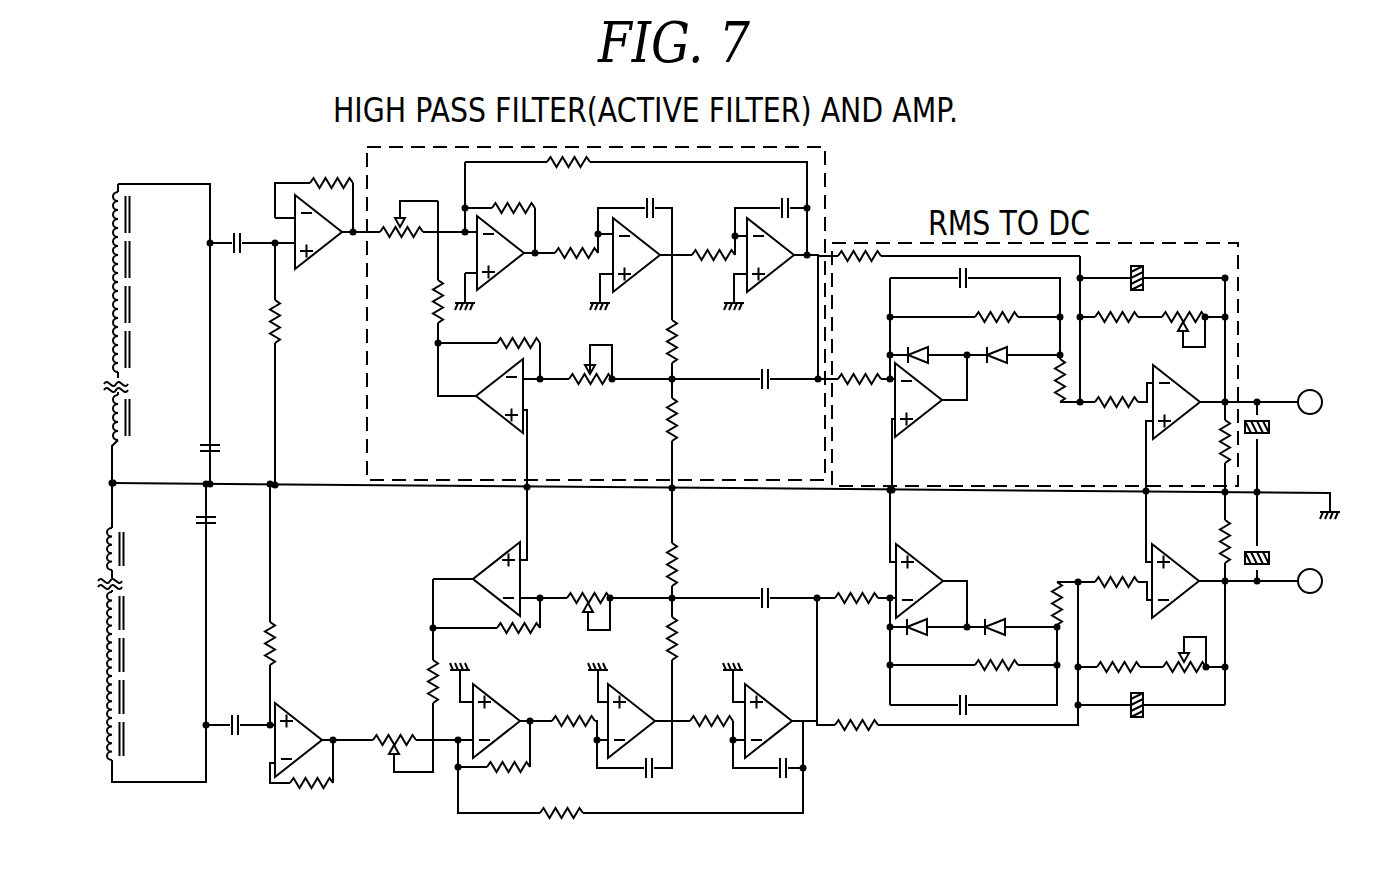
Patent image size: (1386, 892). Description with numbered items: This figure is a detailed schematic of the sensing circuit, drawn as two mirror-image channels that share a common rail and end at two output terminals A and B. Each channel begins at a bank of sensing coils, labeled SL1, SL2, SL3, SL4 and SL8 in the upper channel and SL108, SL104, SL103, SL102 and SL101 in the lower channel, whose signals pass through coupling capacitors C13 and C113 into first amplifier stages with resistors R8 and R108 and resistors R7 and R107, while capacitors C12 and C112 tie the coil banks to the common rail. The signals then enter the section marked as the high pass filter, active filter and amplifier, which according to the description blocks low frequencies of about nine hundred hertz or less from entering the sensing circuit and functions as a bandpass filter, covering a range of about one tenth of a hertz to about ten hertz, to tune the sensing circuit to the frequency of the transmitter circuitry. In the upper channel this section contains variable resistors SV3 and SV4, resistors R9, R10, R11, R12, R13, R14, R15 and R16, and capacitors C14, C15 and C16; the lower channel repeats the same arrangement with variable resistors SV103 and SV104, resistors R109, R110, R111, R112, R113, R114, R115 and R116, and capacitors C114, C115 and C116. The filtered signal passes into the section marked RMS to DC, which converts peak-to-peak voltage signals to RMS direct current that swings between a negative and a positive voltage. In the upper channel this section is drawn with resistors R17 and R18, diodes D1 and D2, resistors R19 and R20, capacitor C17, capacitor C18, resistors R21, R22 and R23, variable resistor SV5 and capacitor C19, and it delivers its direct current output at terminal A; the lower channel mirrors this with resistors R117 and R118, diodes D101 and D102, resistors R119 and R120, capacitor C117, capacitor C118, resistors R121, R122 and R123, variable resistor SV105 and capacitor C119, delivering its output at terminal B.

The sensor coil SL1 is at (144, 217).
The sensor coil SL2 is at (144, 262).
The sensor coil SL3 is at (144, 307).
The sensor coil SL4 is at (144, 352).
The sensor coil SL8 is at (144, 417).
The capacitor C13 is at (242, 224).
The capacitor C12 is at (224, 363).
The resistor R8 is at (314, 187).
The resistor R7 is at (291, 364).
The variable resistor SV3 is at (415, 236).
The resistor R11 is at (419, 272).
The resistor R9 is at (636, 206).
The resistor R10 is at (500, 208).
The resistor R13 is at (580, 233).
The capacitor C14 is at (647, 211).
The resistor R14 is at (714, 235).
The capacitor C15 is at (770, 203).
The resistor R15 is at (650, 317).
The resistor R16 is at (650, 433).
The capacitor C16 is at (715, 358).
The variable resistor SV4 is at (567, 381).
The resistor R12 is at (489, 342).
The resistor R18 is at (949, 272).
The resistor R17 is at (856, 357).
The capacitor C17 is at (975, 311).
The resistor R19 is at (975, 301).
The diode D2 is at (928, 339).
The diode D1 is at (1013, 339).
The resistor R20 is at (1042, 383).
The capacitor C18 is at (1152, 265).
The resistor R21 is at (1121, 335).
The variable resistor SV5 is at (1191, 314).
The resistor R22 is at (1116, 412).
The resistor R23 is at (1201, 385).
The capacitor C19 is at (1277, 447).
The output terminal A is at (1322, 405).
The sensor coil SL108 is at (153, 547).
The sensor coil SL104 is at (153, 613).
The sensor coil SL103 is at (153, 657).
The sensor coil SL102 is at (153, 701).
The sensor coil SL101 is at (153, 745).
The capacitor C112 is at (229, 604).
The capacitor C113 is at (240, 745).
The resistor R107 is at (301, 604).
The resistor R108 is at (304, 785).
The variable resistor SV103 is at (412, 736).
The resistor R111 is at (406, 642).
The resistor R112 is at (488, 639).
The variable resistor SV104 is at (651, 595).
The capacitor C116 is at (782, 621).
The resistor R116 is at (700, 543).
The resistor R115 is at (700, 660).
The resistor R113 is at (569, 742).
The resistor R110 is at (494, 766).
The resistor R109 is at (630, 769).
The capacitor C114 is at (651, 766).
The resistor R114 is at (709, 742).
The capacitor C115 is at (761, 775).
The resistor R117 is at (856, 619).
The resistor R118 is at (947, 656).
The diode D102 is at (932, 642).
The diode D101 is at (1012, 642).
The resistor R119 is at (973, 681).
The capacitor C117 is at (973, 670).
The resistor R120 is at (1027, 597).
The resistor R122 is at (1104, 573).
The resistor R121 is at (1120, 651).
The variable resistor SV105 is at (1185, 672).
The capacitor C118 is at (1151, 720).
The resistor R123 is at (1195, 598).
The capacitor C119 is at (1281, 536).
The output terminal B is at (1322, 584).